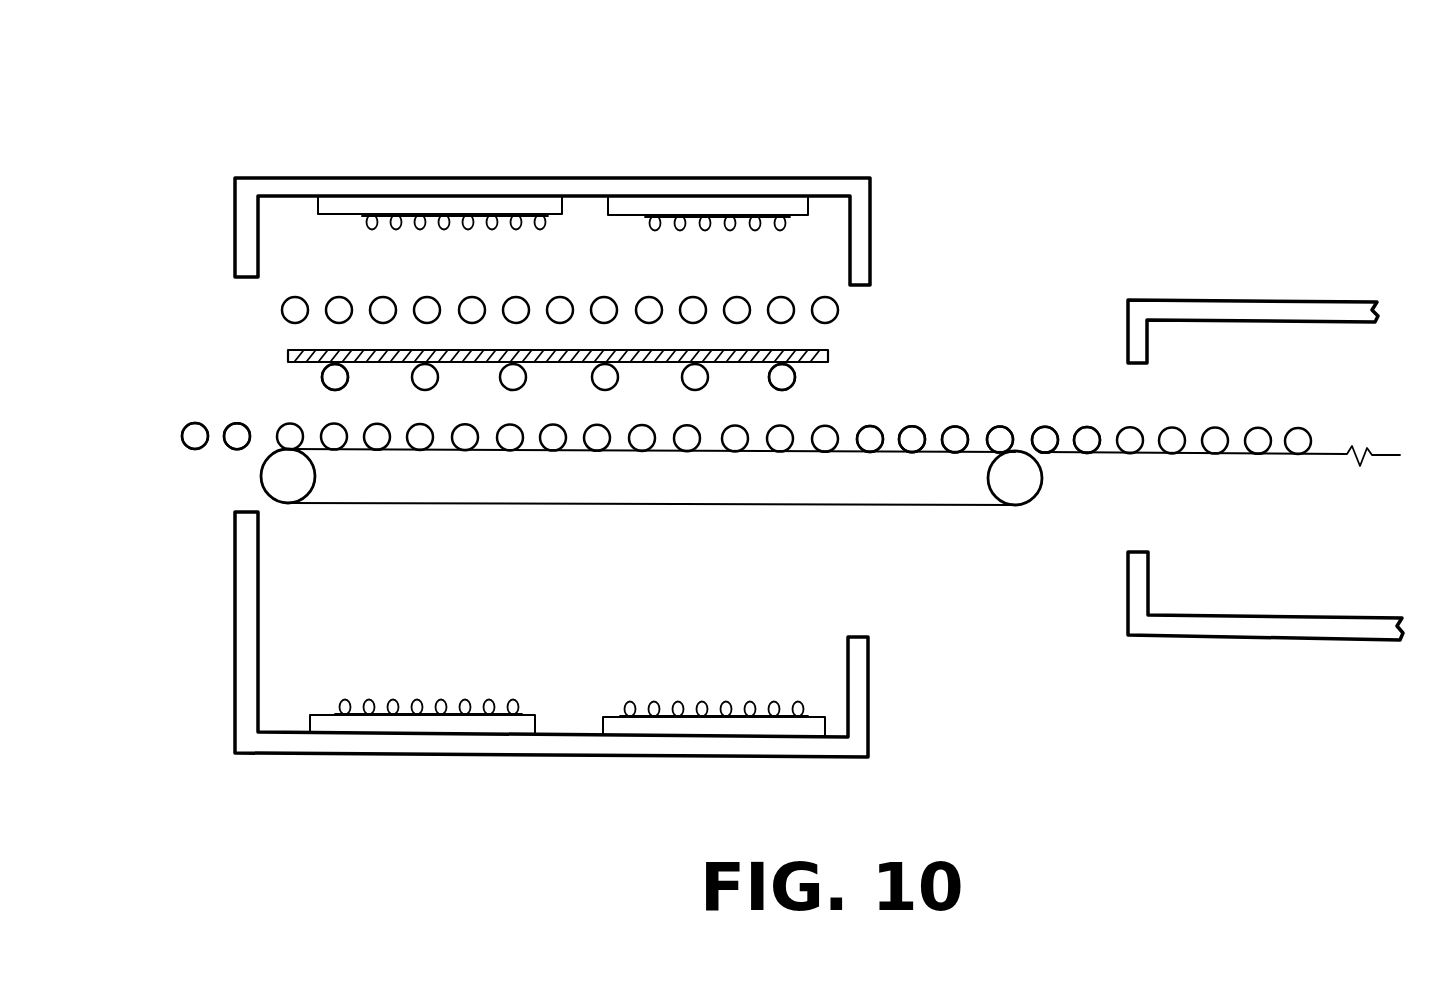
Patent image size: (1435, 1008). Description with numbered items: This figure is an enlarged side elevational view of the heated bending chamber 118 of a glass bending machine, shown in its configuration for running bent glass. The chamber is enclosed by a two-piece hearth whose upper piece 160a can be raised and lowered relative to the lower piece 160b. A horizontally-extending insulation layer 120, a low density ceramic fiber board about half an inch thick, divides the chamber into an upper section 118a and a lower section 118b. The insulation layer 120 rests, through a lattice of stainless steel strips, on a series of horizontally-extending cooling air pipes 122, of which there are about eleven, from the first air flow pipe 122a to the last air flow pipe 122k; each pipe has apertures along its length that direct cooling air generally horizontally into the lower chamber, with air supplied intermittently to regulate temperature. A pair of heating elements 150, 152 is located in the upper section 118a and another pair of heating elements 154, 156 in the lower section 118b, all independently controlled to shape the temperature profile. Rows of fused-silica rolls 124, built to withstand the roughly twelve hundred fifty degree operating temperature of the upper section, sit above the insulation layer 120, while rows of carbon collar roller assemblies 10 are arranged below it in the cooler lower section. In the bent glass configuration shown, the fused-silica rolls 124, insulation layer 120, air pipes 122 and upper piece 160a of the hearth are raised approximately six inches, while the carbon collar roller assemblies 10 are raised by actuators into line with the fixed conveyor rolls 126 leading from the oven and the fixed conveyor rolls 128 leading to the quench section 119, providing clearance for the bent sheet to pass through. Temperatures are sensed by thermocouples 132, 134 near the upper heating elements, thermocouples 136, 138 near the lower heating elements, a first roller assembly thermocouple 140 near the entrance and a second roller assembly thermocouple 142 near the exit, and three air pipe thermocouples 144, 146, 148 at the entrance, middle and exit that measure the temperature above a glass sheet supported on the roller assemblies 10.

The carbon collar roller assemblies 10 is at (827, 478).
The bending chamber 118 is at (814, 166).
The upper section 118a is at (622, 272).
The lower section 118b is at (600, 632).
The quench section 119 is at (1262, 282).
The insulation layer 120 is at (828, 352).
The cooling air pipes 122 is at (425, 377).
The air flow pipe 122a is at (322, 377).
The air flow pipe 122k is at (782, 377).
The fused-silica rolls 124 is at (339, 310).
The fixed conveyor rolls 126 is at (237, 449).
The fixed conveyor rolls 128 is at (1085, 427).
The thermocouple 132 is at (453, 257).
The thermocouple 134 is at (687, 257).
The thermocouple 136 is at (447, 648).
The thermocouple 138 is at (738, 650).
The first roller assembly thermocouple 140 is at (400, 434).
The second roller assembly thermocouple 142 is at (755, 441).
The first air pipe thermocouple 144 is at (375, 380).
The second air pipe thermocouple 146 is at (550, 383).
The third air pipe thermocouple 148 is at (738, 383).
The heating element 150 is at (330, 196).
The heating element 152 is at (617, 213).
The heating element 154 is at (318, 710).
The heating element 156 is at (620, 710).
The upper piece of hearth 160a is at (868, 183).
The lower piece of hearth 160b is at (858, 690).